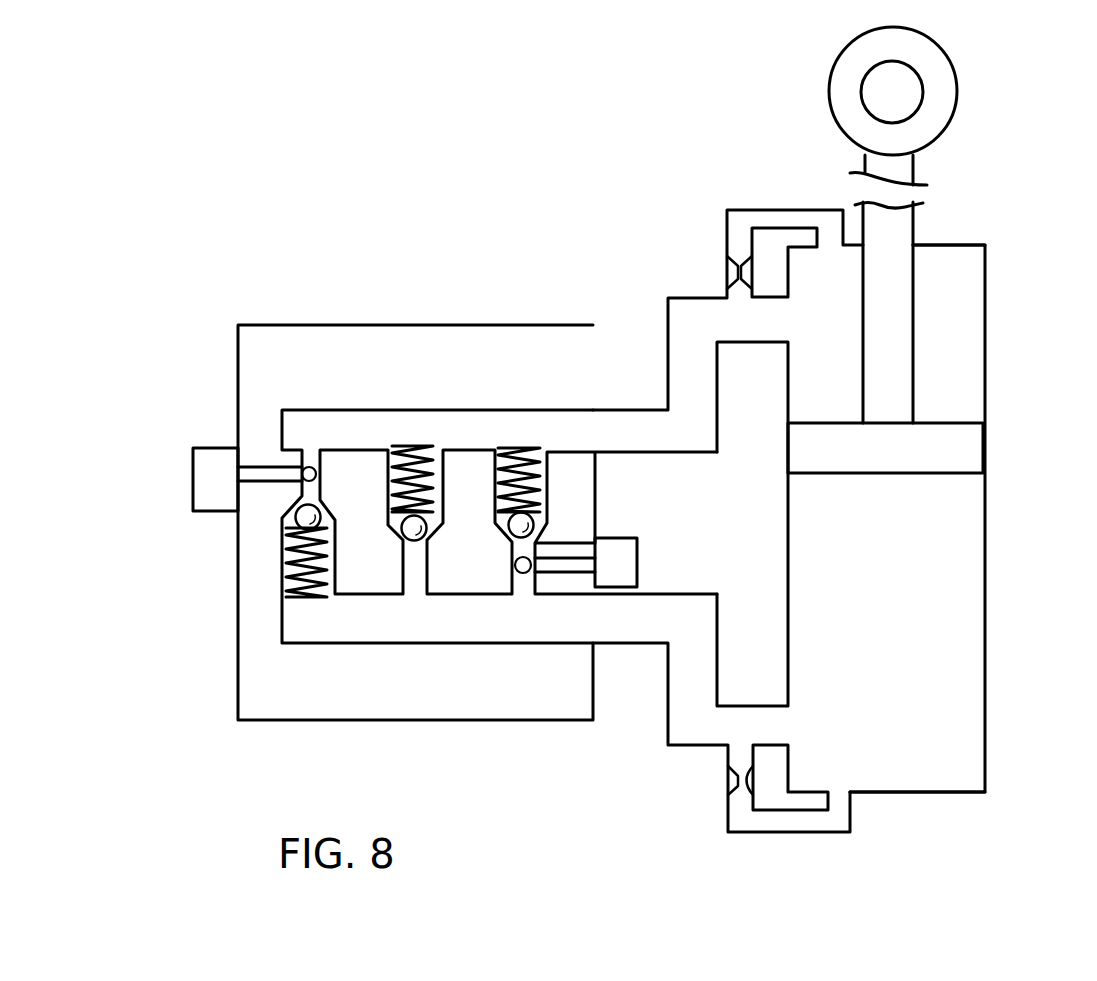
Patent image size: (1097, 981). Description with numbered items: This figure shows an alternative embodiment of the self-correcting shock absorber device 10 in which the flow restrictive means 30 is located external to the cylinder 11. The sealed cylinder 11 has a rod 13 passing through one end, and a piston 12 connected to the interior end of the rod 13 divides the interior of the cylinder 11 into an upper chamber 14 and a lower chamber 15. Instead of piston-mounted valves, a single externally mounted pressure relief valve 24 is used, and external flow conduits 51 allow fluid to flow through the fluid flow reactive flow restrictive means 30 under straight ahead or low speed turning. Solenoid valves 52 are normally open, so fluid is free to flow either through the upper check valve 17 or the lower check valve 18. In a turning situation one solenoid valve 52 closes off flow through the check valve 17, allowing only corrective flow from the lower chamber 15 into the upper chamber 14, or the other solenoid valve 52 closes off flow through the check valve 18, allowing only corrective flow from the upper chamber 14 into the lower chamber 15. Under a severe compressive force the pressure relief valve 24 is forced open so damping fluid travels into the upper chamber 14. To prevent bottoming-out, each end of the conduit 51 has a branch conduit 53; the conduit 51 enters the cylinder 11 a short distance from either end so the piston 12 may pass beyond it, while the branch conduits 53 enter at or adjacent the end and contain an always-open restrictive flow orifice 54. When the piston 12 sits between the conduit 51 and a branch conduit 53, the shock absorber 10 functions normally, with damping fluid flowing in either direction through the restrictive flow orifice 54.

The shock absorber device 10 is at (1018, 343).
The cylinder 11 is at (985, 672).
The piston 12 is at (960, 451).
The rod 13 is at (900, 235).
The upper chamber 14 is at (954, 296).
The lower chamber 15 is at (928, 722).
The upper check valve 17 is at (281, 613).
The lower check valve 18 is at (535, 541).
The pressure relief valve 24 is at (430, 568).
The flow restrictive means 30 is at (377, 325).
The external flow conduit 51 is at (743, 615).
The solenoid valve 52 is at (212, 512).
The branch conduit 53 is at (790, 210).
The restrictive flow orifice 54 is at (728, 268).